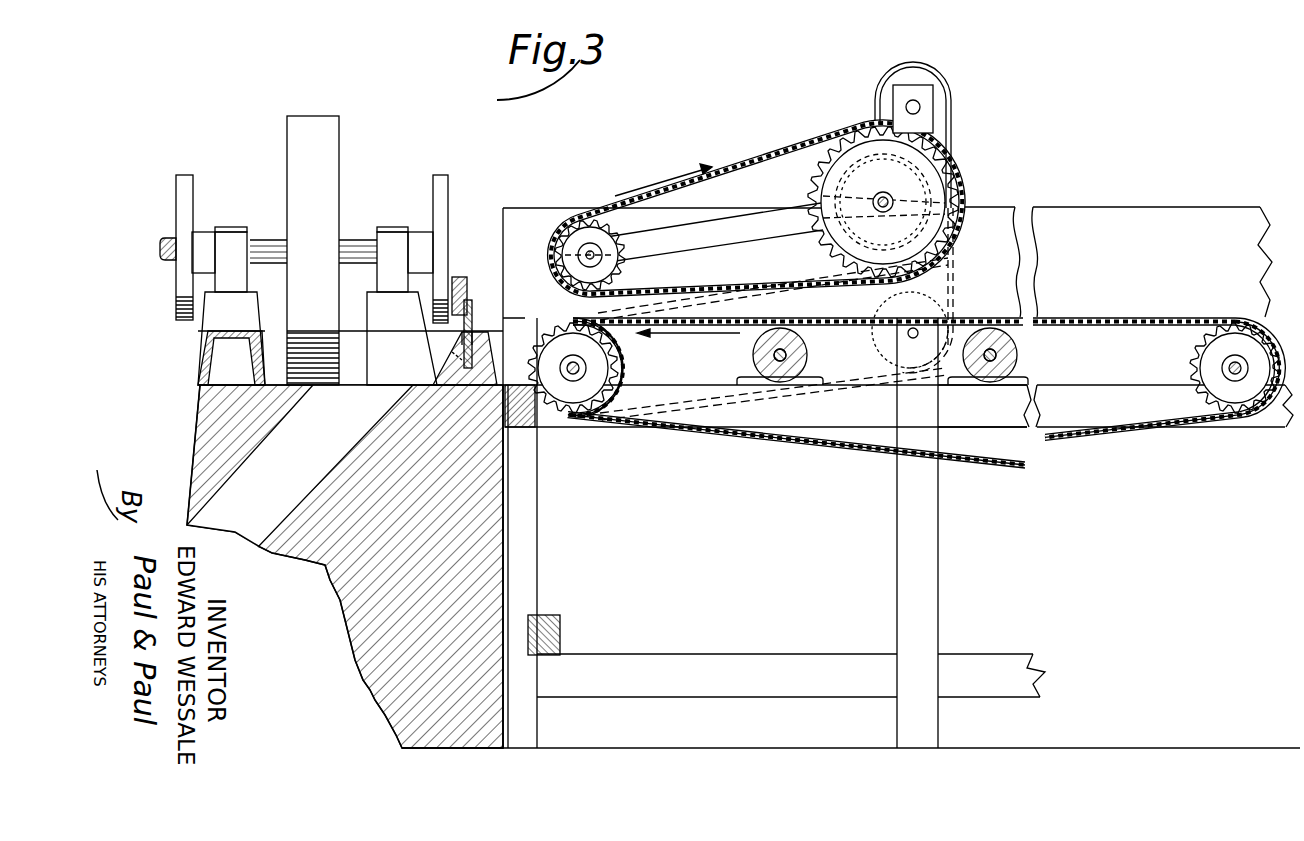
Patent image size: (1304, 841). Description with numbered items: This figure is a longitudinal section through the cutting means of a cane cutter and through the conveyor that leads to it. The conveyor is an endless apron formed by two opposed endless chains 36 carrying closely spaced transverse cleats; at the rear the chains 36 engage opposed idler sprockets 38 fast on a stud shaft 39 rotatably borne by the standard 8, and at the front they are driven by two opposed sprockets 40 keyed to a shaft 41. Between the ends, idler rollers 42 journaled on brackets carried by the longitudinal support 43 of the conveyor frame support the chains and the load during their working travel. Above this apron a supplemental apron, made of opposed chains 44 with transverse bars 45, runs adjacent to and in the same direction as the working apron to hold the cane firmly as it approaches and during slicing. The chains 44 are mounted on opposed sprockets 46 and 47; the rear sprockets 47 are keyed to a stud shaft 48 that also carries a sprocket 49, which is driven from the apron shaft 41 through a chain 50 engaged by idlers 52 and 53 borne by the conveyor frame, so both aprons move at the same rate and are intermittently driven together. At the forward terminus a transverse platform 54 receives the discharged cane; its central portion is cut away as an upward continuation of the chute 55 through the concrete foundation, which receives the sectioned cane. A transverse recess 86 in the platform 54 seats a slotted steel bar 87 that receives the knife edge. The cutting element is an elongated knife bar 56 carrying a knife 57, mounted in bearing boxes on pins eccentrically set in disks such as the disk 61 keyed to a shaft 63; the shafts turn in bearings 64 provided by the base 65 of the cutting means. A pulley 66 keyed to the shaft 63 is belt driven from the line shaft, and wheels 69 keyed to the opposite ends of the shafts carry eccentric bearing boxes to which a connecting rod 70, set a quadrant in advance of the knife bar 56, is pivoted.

The standard 8 is at (527, 569).
The endless chains 36 is at (1141, 435).
The idler sprockets 38 is at (1192, 354).
The stud shaft 39 is at (1236, 372).
The sprockets 40 is at (603, 358).
The shaft 41 is at (578, 373).
The idler rollers 42 is at (996, 372).
The longitudinal support 43 is at (968, 412).
The chains 44 is at (738, 170).
The bars 45 is at (746, 166).
The sprockets 46 is at (582, 238).
The rear sprockets 47 is at (955, 157).
The stud shaft 48 is at (880, 195).
The sprocket 49 is at (846, 156).
The chain 50 is at (953, 133).
The idler 52 is at (882, 337).
The idler 53 is at (938, 115).
The platform 54 is at (442, 372).
The chute 55 is at (345, 566).
The knife bar 56 is at (458, 278).
The knife 57 is at (470, 302).
The disk 61 is at (442, 180).
The shaft 63 is at (350, 240).
The bearings 64 is at (394, 236).
The base 65 is at (212, 333).
The pulley 66 is at (313, 130).
The wheels 69 is at (188, 182).
The connecting rod 70 is at (163, 242).
The recess 86 is at (452, 356).
The bar 87 is at (460, 342).